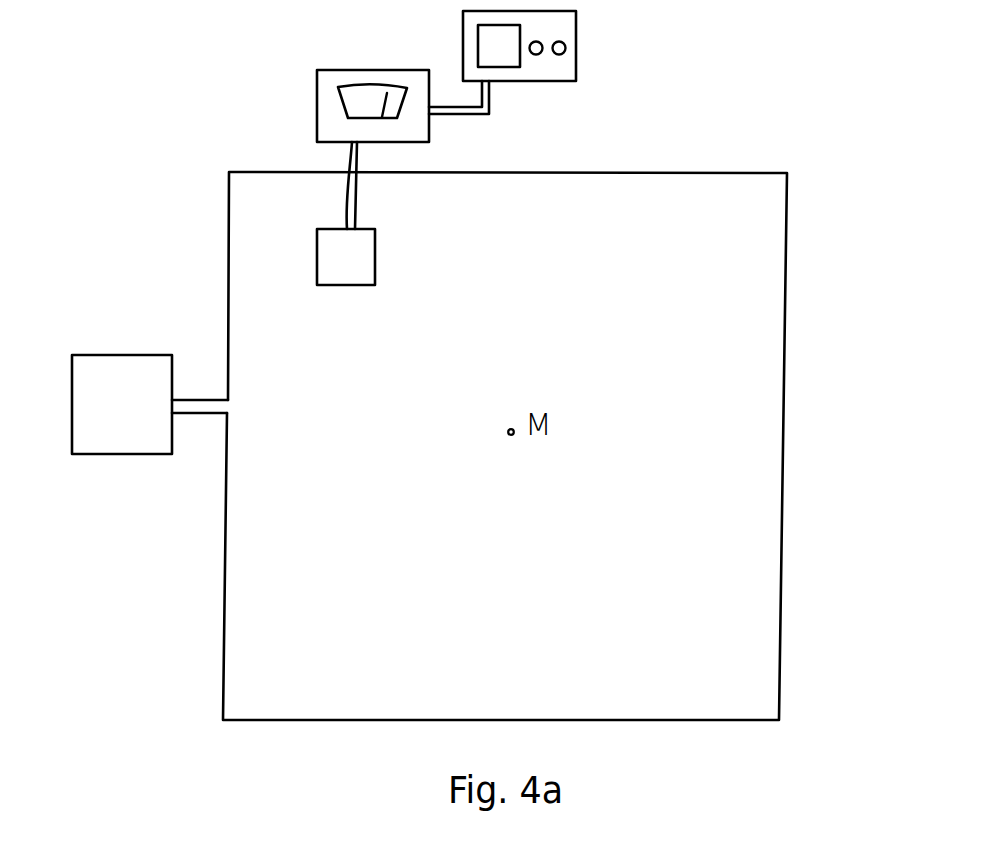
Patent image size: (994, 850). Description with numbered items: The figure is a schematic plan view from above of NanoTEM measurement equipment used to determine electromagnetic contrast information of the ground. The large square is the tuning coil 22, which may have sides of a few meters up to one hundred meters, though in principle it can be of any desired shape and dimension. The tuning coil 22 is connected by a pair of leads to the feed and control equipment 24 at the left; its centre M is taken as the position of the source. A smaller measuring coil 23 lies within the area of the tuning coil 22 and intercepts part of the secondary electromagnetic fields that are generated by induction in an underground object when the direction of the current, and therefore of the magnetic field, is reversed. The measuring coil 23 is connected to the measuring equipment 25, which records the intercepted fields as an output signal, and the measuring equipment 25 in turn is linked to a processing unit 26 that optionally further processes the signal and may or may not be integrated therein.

The tuning coil 22 is at (635, 173).
The measuring coil 23 is at (322, 260).
The feed and control equipment 24 is at (112, 452).
The measuring equipment 25 is at (318, 111).
The processing unit 26 is at (576, 72).